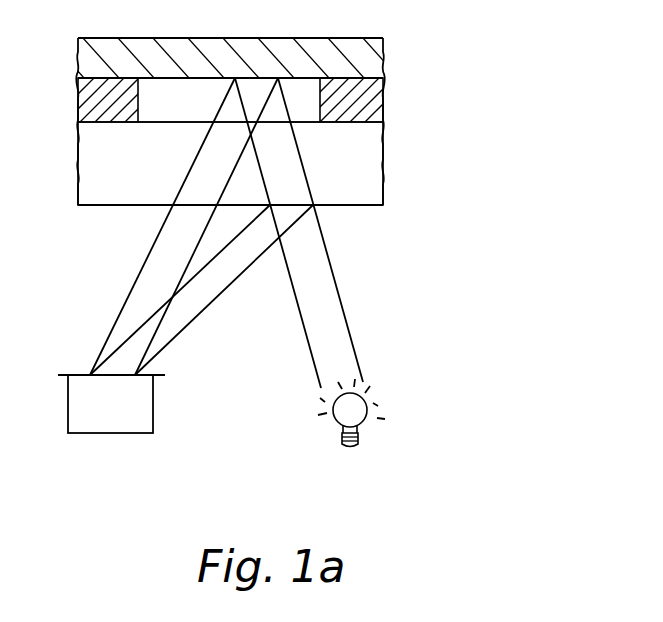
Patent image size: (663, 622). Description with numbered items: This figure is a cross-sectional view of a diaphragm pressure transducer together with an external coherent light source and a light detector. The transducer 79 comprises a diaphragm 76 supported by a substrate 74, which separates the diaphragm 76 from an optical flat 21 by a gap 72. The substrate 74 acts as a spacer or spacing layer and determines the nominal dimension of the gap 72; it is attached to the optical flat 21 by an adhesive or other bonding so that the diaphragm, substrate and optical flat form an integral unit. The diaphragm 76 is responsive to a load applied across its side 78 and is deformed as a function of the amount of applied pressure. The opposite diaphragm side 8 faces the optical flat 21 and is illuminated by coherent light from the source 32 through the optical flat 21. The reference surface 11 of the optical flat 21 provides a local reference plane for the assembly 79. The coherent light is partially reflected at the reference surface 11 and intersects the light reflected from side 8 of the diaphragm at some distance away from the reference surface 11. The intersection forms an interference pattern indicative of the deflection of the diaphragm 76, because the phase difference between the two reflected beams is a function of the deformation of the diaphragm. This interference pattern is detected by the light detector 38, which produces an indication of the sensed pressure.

The diaphragm side 8 is at (201, 84).
The reference surface 11 is at (354, 212).
The optical flat 21 is at (126, 174).
The coherent light source 32 is at (366, 424).
The light detector 38 is at (122, 419).
The gap 72 is at (182, 116).
The substrate 74 is at (78, 95).
The diaphragm 76 is at (398, 49).
The diaphragm side 78 is at (278, 38).
The transducer 79 is at (507, 108).